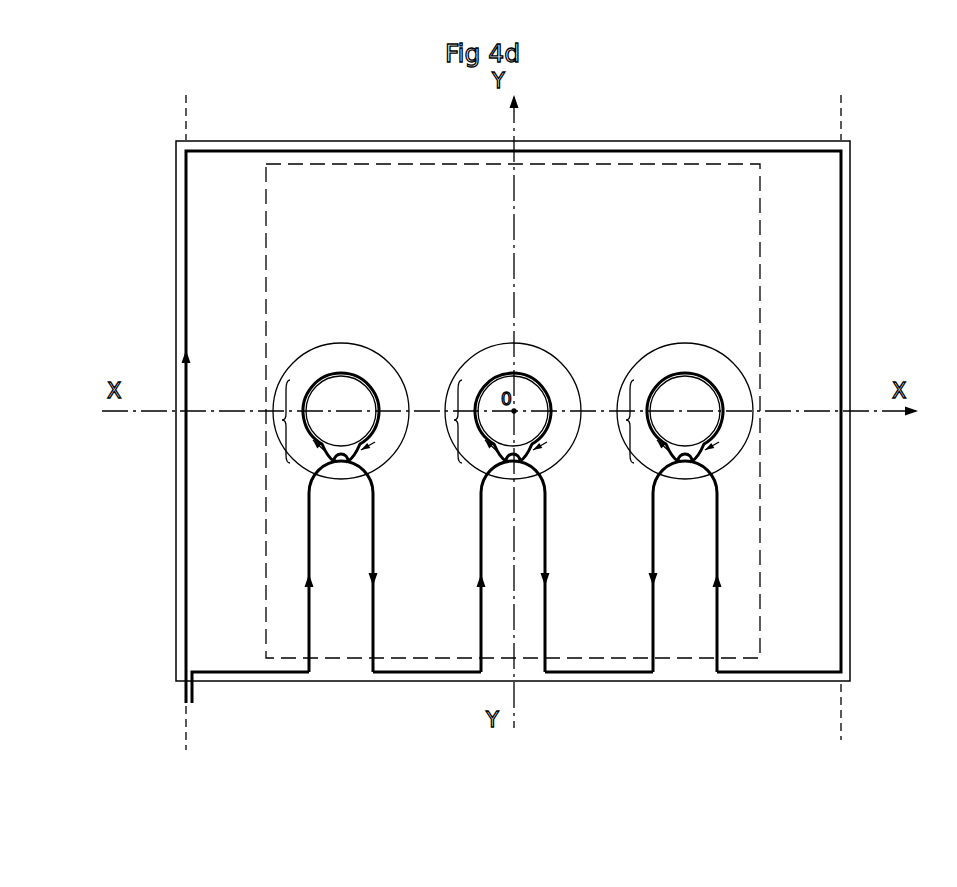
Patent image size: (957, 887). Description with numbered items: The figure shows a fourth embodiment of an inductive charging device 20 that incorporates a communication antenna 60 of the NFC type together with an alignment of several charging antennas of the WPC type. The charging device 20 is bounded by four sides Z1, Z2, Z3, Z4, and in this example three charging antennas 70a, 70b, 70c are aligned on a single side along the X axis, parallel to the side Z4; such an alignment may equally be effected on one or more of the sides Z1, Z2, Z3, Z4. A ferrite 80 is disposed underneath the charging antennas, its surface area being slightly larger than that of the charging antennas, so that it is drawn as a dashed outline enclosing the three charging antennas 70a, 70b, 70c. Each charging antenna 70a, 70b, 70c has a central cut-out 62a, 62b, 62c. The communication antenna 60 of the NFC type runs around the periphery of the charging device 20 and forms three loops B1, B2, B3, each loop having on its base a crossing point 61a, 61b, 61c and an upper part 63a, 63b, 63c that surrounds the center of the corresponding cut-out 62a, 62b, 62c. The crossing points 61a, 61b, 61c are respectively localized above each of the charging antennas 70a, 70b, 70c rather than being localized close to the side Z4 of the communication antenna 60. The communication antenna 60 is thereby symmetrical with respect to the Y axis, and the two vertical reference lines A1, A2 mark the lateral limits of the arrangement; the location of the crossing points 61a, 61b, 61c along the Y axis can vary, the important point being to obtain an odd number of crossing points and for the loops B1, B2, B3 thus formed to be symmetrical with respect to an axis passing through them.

The charging device 20 is at (850, 242).
The communication antenna 60 is at (583, 149).
The ferrite 80 is at (763, 444).
The crossing point 61a is at (346, 482).
The crossing point 61b is at (518, 482).
The crossing point 61c is at (690, 484).
The cut-out 62a is at (350, 395).
The cut-out 62b is at (522, 395).
The cut-out 62c is at (695, 395).
The upper part 63a is at (316, 378).
The upper part 63b is at (476, 378).
The upper part 63c is at (658, 378).
The charging antenna 70a is at (300, 474).
The charging antenna 70b is at (470, 476).
The charging antenna 70c is at (642, 476).
The side Z1 is at (176, 340).
The side Z2 is at (418, 142).
The side Z3 is at (850, 591).
The side Z4 is at (282, 682).
The axis line A1 is at (189, 435).
The axis line A2 is at (843, 431).
The loop B1 is at (442, 421).
The loop B2 is at (270, 421).
The loop B3 is at (614, 421).